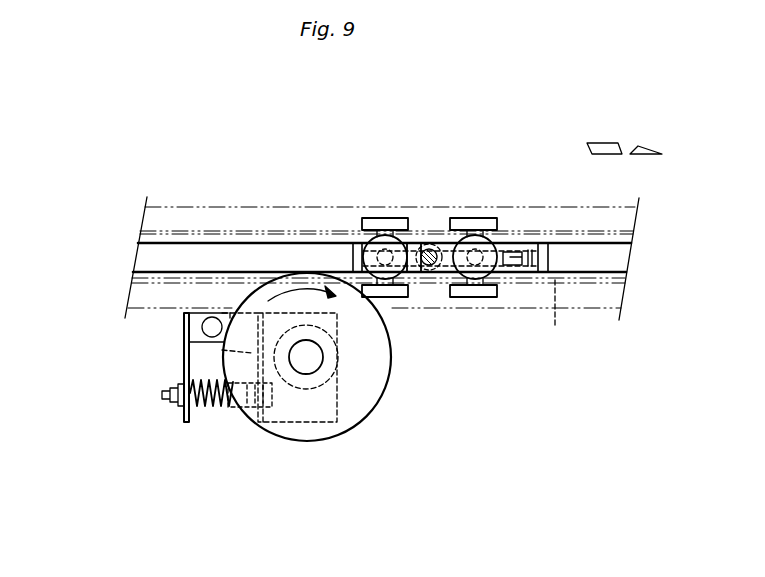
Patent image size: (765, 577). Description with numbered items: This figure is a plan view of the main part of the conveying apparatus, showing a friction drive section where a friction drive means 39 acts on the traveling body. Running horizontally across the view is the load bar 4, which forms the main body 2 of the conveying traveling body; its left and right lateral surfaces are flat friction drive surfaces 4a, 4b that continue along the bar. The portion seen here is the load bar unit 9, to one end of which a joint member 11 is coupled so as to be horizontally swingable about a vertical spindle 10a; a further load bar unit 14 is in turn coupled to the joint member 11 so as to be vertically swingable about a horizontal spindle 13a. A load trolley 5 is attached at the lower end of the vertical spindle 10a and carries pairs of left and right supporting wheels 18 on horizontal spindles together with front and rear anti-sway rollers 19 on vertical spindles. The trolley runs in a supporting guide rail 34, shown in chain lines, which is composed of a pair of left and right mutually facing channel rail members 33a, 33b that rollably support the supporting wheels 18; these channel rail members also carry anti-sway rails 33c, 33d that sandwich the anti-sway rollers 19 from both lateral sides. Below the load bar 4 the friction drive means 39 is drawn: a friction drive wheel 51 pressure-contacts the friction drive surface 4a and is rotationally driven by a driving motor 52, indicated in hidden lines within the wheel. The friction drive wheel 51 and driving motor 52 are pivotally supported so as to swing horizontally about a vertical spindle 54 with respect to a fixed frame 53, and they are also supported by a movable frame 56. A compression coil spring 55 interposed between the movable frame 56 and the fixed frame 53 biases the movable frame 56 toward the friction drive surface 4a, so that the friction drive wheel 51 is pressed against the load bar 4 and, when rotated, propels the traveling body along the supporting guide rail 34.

The main body 2 is at (257, 242).
The load bar 4 is at (562, 236).
The friction drive surface 4a is at (160, 274).
The friction drive surface 4b is at (186, 243).
The load trolley 5 is at (498, 299).
The load bar unit 9 is at (148, 257).
The vertical spindle 10a is at (429, 248).
The joint member 11 is at (484, 250).
The horizontal spindle 13a is at (562, 316).
The load bar unit 14 is at (613, 257).
The supporting wheels 18 is at (383, 219).
The anti-sway rollers 19 is at (466, 286).
The channel rail member 33a is at (598, 300).
The channel rail member 33b is at (623, 215).
The anti-sway rail 33c is at (613, 290).
The anti-sway rail 33d is at (620, 233).
The supporting guide rail 34 is at (308, 207).
The friction drive means 39 is at (303, 447).
The friction drive wheel 51 is at (290, 431).
The driving motor 52 is at (322, 380).
The fixed frame 53 is at (185, 367).
The vertical spindle 54 is at (212, 327).
The compression coil spring 55 is at (218, 413).
The movable frame 56 is at (320, 422).